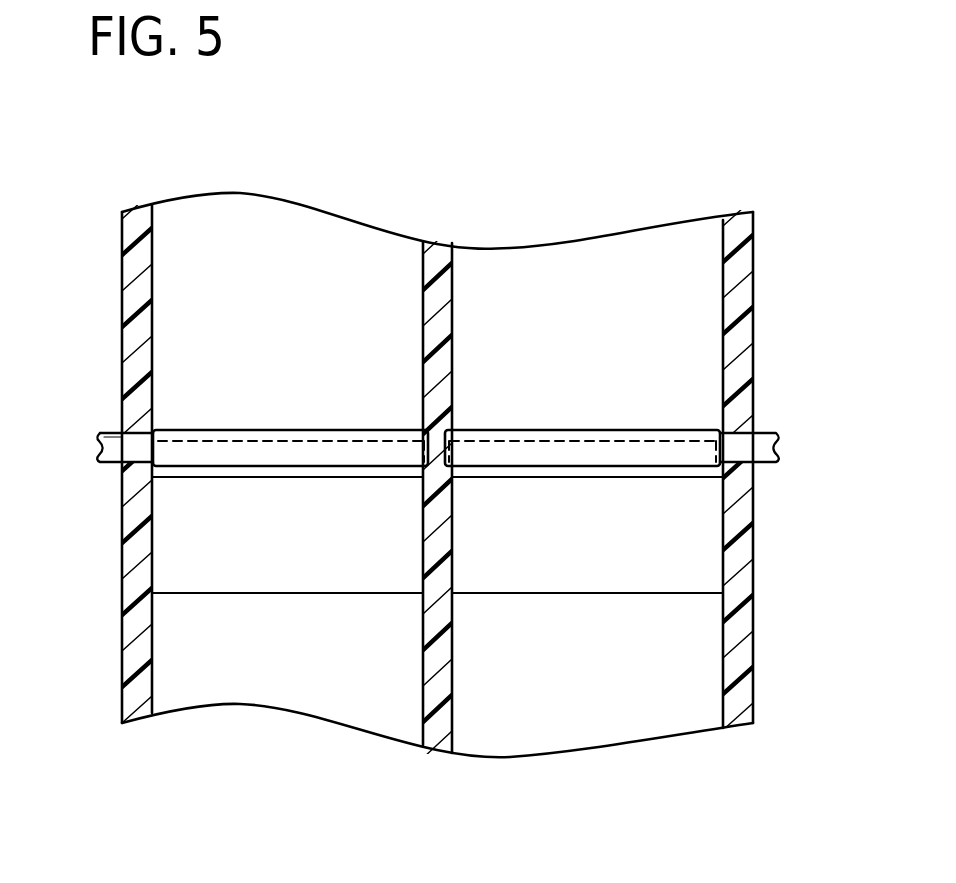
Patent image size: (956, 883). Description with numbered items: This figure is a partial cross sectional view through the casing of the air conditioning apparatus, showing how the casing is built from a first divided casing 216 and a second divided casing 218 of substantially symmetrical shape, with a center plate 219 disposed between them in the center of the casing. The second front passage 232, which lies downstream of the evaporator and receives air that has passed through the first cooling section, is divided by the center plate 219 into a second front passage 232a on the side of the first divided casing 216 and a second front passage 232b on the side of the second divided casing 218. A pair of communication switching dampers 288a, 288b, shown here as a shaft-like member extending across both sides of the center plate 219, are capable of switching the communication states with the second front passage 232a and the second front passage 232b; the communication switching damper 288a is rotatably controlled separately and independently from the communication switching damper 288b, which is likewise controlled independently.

The first divided casing 216 is at (740, 292).
The second divided casing 218 is at (128, 270).
The center plate 219 is at (430, 295).
The second front passage 232 is at (438, 778).
The second front passage 232a is at (637, 720).
The second front passage 232b is at (293, 682).
The communication switching damper 288a is at (690, 541).
The communication switching damper 288b is at (183, 541).